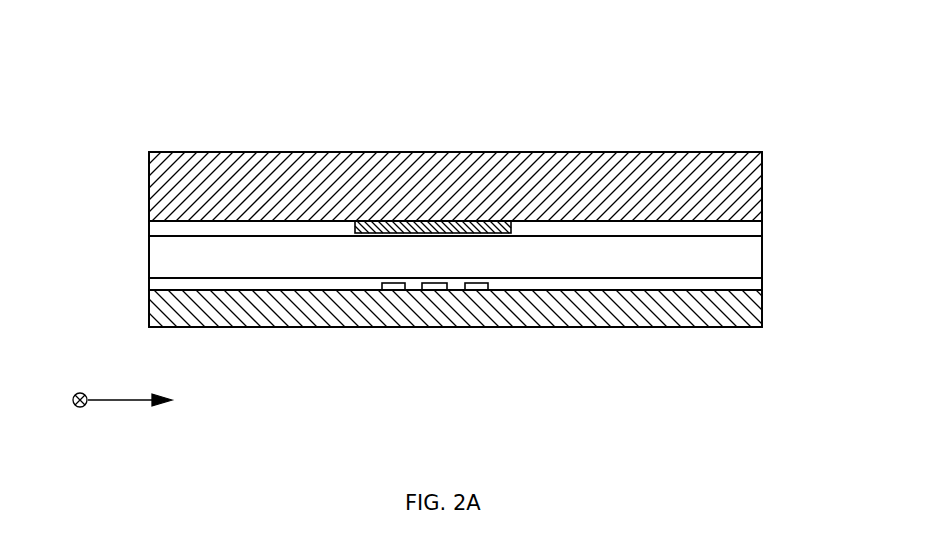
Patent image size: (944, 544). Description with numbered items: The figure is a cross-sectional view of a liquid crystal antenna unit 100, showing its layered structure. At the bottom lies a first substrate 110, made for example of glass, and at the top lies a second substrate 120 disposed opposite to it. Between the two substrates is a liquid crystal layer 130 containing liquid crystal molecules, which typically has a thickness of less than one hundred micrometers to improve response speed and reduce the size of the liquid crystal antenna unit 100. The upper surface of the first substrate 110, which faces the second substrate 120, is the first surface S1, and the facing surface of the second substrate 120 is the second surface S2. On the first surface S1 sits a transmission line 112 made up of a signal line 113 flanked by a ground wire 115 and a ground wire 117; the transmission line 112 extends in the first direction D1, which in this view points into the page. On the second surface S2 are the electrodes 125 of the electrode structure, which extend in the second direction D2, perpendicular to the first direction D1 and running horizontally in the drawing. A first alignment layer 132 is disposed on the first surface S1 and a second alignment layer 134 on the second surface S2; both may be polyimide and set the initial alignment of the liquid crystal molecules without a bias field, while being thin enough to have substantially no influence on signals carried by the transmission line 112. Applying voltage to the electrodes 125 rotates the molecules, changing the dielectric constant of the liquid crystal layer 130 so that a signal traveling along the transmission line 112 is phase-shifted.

The liquid crystal antenna unit 100 is at (519, 124).
The first substrate 110 is at (748, 315).
The transmission line 112 is at (456, 361).
The signal line 113 is at (437, 291).
The ground wire 115 is at (390, 291).
The ground wire 117 is at (498, 333).
The second substrate 120 is at (748, 172).
The electrodes 125 is at (387, 221).
The liquid crystal layer 130 is at (748, 258).
The first alignment layer 132 is at (748, 283).
The second alignment layer 134 is at (748, 228).
The first surface S1 is at (647, 291).
The second surface S2 is at (643, 220).
The first direction D1 is at (62, 400).
The second direction D2 is at (145, 400).